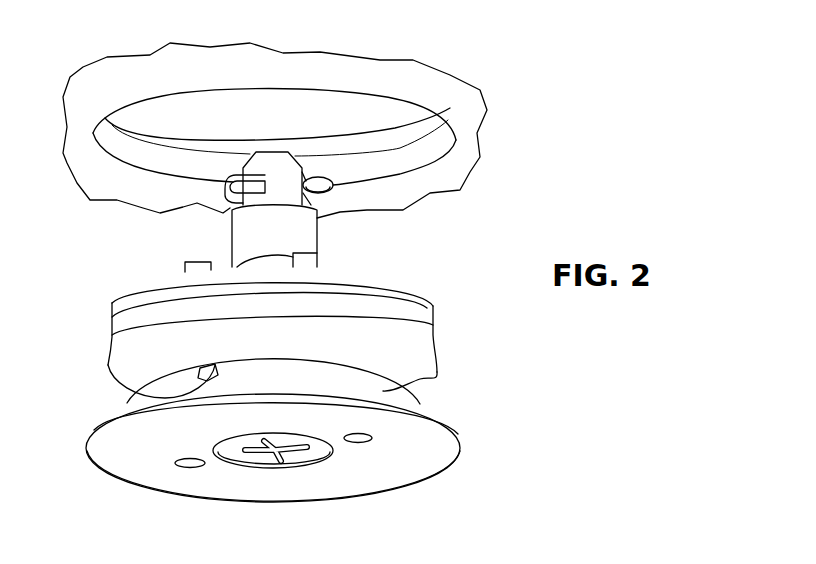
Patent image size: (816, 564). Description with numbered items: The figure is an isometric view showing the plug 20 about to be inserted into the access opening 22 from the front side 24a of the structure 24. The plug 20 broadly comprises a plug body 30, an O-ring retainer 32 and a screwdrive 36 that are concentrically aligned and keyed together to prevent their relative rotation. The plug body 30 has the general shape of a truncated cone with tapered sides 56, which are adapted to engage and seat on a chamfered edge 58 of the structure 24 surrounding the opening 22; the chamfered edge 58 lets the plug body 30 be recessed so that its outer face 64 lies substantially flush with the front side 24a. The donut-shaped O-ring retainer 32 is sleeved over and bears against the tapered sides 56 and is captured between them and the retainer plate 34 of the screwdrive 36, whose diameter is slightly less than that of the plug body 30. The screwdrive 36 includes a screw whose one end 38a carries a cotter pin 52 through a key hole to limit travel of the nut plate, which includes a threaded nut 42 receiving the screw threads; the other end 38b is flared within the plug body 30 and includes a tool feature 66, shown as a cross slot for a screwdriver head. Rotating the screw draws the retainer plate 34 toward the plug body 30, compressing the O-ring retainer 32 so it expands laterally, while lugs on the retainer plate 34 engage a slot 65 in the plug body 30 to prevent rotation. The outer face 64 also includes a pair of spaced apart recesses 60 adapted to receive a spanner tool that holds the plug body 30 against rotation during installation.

The plug 20 is at (424, 256).
The opening 22 is at (370, 115).
The structure 24 is at (417, 82).
The front side 24a is at (186, 69).
The plug body 30 is at (397, 403).
The O-ring retainer 32 is at (407, 350).
The retainer plate 34 is at (351, 283).
The screwdrive 36 is at (219, 236).
The one end of the screw 38a is at (283, 149).
The other end of the screw 38b is at (273, 462).
The threaded nut 42 is at (297, 237).
The cotter pin 52 is at (472, 177).
The tapered sides 56 is at (388, 389).
The chamfered edge 58 is at (432, 137).
The recesses 60 is at (190, 470).
The outer face 64 is at (423, 458).
The slot 65 is at (110, 368).
The tool feature 66 is at (256, 459).